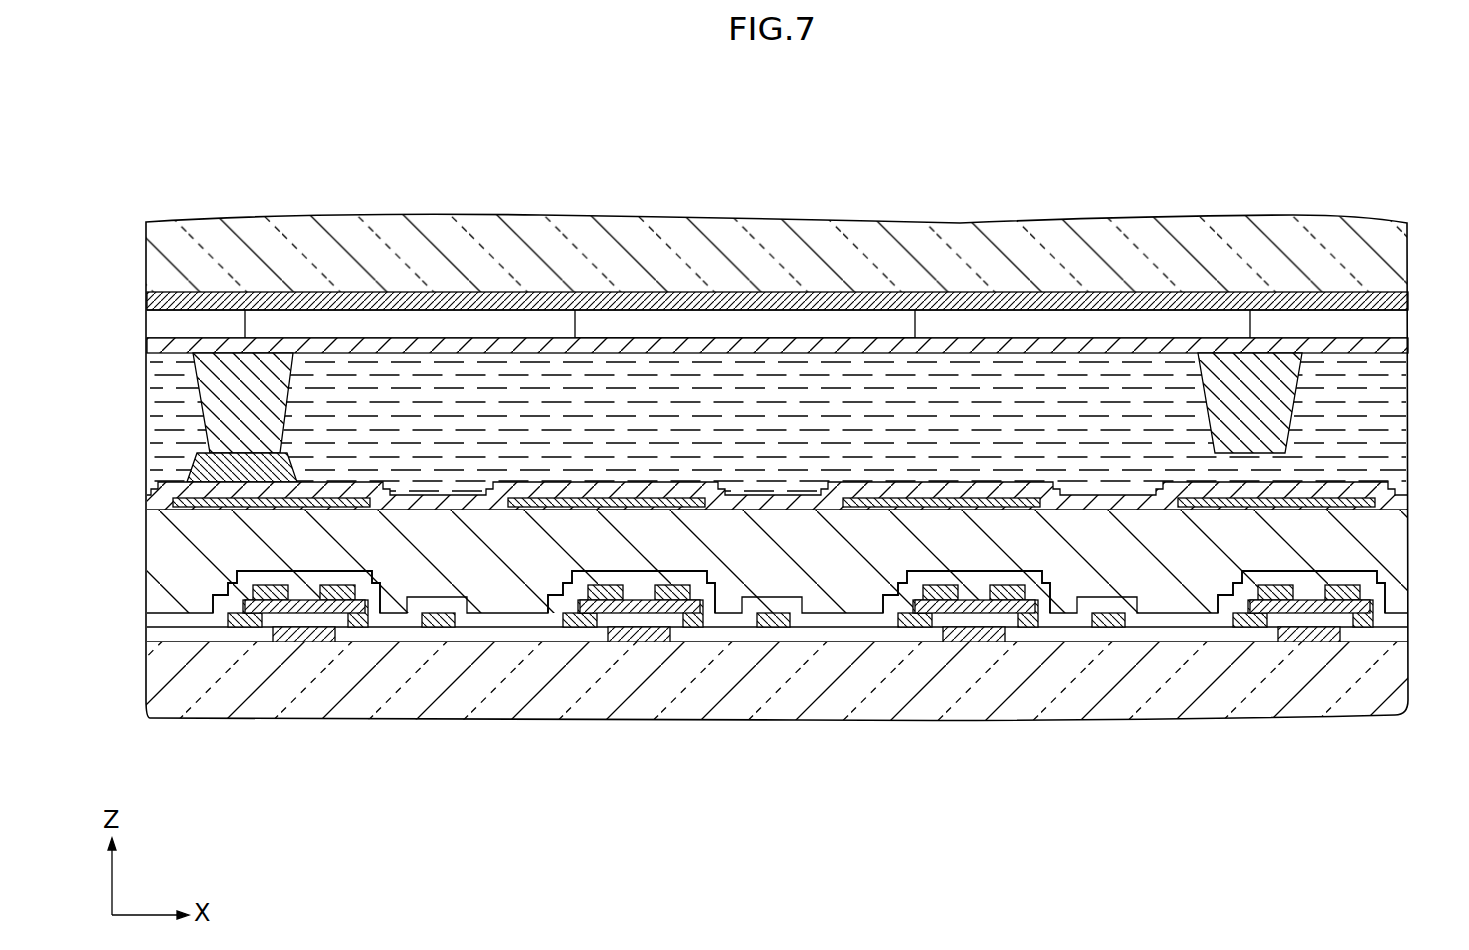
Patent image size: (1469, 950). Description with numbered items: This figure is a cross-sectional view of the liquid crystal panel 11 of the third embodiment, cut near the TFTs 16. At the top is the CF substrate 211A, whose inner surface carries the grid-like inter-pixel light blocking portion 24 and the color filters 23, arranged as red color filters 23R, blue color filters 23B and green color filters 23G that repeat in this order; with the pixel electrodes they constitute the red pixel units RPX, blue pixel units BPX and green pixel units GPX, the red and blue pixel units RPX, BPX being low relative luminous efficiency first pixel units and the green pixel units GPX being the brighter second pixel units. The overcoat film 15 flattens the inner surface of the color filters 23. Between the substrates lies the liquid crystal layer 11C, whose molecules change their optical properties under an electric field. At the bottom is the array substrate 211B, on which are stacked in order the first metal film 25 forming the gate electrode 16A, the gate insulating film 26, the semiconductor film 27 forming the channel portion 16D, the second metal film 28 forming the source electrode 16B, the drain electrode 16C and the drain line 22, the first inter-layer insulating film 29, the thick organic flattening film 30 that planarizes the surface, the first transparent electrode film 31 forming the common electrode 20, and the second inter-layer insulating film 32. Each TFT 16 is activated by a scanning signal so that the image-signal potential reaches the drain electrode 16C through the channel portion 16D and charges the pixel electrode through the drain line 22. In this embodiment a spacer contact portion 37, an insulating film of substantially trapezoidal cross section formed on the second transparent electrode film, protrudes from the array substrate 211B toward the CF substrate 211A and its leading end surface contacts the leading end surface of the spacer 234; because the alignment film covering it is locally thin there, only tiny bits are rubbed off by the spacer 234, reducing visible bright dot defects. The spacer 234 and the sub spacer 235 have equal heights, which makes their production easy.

The liquid crystal panel 11 is at (1147, 262).
The liquid crystal layer 11C is at (978, 393).
The overcoat film 15 is at (633, 347).
The TFT 16 is at (294, 646).
The gate electrode 16A is at (318, 613).
The source electrode 16B is at (240, 620).
The drain electrode 16C is at (365, 628).
The channel portion 16D is at (335, 625).
The common electrode 20 is at (778, 322).
The drain line 22 is at (440, 628).
The color filters 23 is at (777, 235).
The red color filters 23R is at (212, 328).
The green color filters 23G is at (692, 328).
The blue color filters 23B is at (438, 328).
The inter-pixel light blocking portion 24 is at (535, 300).
The first metal film 25 is at (807, 716).
The gate insulating film 26 is at (773, 633).
The semiconductor film 27 is at (806, 713).
The second metal film 28 is at (786, 700).
The first inter-layer insulating film 29 is at (823, 617).
The flattening film 30 is at (840, 570).
The first transparent electrode film 31 is at (887, 485).
The second inter-layer insulating film 32 is at (1110, 503).
The spacer contact portion 37 is at (240, 505).
The CF substrate 211A is at (345, 240).
The array substrate 211B is at (594, 700).
The spacer 234 is at (245, 413).
The sub spacer 235 is at (1238, 400).
The red pixel units RPX is at (157, 319).
The green pixel units GPX is at (773, 319).
The blue pixel units BPX is at (490, 319).